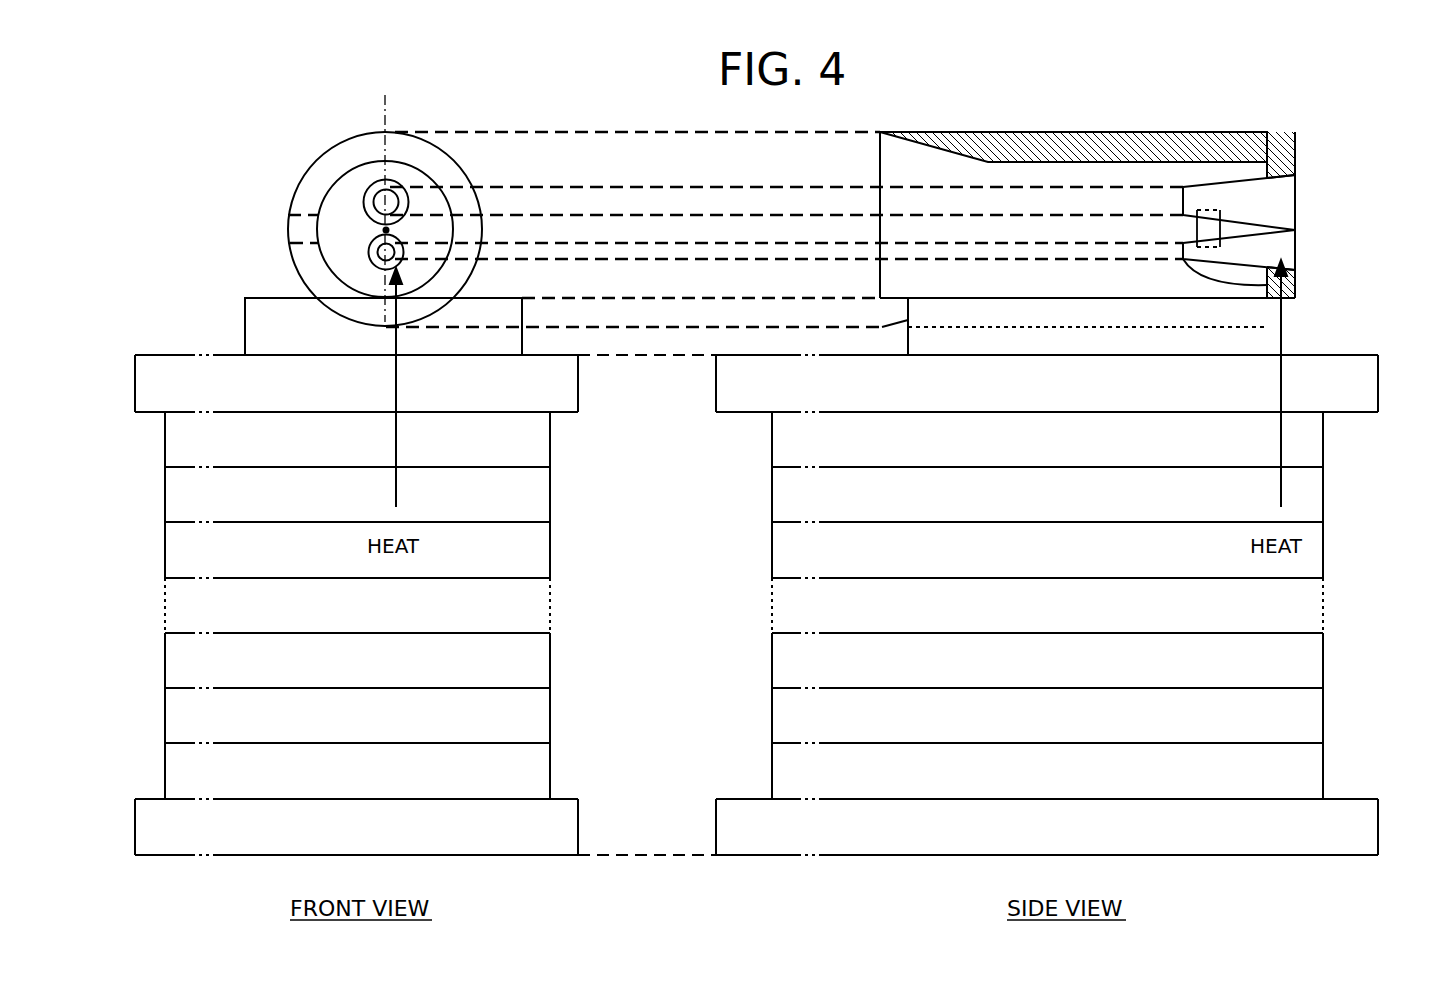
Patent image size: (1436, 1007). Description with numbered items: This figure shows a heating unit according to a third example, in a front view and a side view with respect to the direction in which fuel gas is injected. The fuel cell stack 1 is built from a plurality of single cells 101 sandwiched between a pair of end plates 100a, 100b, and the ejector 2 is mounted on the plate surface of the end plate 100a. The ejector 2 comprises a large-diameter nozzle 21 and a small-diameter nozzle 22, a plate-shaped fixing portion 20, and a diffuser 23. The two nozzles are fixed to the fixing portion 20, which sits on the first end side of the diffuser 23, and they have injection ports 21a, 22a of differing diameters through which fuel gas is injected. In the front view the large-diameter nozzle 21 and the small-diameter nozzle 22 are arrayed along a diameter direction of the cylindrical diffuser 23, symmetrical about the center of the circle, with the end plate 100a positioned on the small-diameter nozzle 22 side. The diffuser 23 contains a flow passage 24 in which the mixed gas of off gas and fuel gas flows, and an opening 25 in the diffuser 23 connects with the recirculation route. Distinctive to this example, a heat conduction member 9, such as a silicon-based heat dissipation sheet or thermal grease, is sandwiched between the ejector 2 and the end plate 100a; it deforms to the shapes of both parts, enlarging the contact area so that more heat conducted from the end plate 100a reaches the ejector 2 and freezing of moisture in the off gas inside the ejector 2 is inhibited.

The fuel cell stack 1 is at (632, 408).
The ejector 2 is at (480, 150).
The heat conduction member 9 is at (522, 298).
The fixing portion 20 is at (1268, 132).
The large-diameter nozzle 21 is at (280, 283).
The injection port 21a is at (1187, 187).
The small-diameter nozzle 22 is at (390, 239).
The injection port 22a is at (1283, 272).
The diffuser 23 is at (394, 132).
The flow passage 24 is at (352, 241).
The opening 25 is at (306, 213).
The end plate 100a is at (578, 400).
The end plate 100b is at (578, 815).
The single cells 101 is at (550, 453).